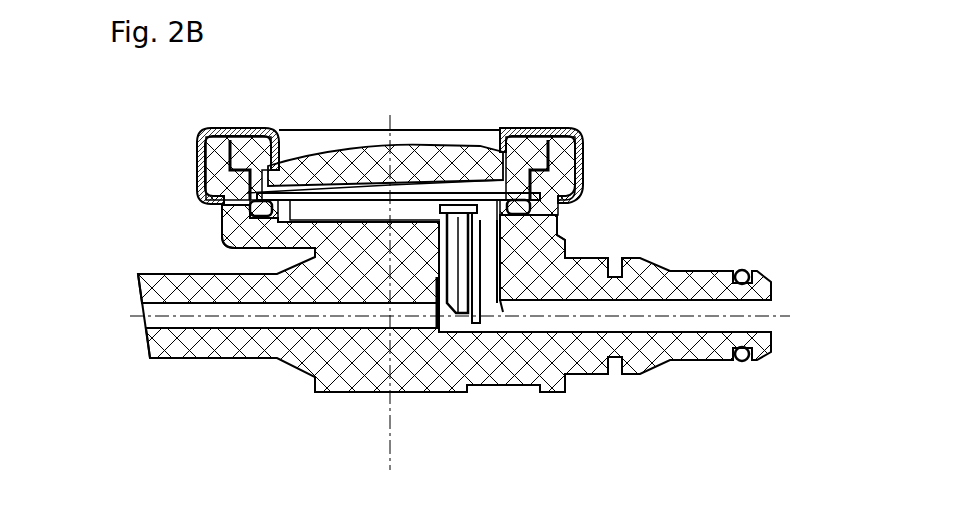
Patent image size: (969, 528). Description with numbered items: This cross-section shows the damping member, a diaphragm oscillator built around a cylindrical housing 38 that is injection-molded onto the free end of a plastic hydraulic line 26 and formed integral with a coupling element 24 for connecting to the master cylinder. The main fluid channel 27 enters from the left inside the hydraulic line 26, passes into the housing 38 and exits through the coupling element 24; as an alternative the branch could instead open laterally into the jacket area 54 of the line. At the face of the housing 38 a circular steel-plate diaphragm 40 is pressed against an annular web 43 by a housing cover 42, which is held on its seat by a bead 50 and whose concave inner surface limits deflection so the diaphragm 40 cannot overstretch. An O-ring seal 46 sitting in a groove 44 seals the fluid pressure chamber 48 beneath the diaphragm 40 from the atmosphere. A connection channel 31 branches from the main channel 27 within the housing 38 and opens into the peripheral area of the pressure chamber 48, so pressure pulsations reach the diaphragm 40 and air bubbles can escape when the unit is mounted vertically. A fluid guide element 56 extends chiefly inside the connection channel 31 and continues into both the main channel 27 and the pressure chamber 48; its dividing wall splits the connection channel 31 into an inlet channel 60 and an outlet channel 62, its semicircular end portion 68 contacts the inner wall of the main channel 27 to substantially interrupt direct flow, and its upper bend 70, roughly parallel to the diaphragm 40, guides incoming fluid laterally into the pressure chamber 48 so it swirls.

The coupling element 24 is at (660, 267).
The hydraulic line 26 is at (225, 376).
The main fluid channel 27 is at (765, 308).
The connection channel 31 is at (455, 300).
The housing 38 is at (548, 216).
The diaphragm 40 is at (345, 185).
The housing cover 42 is at (404, 157).
The annular web 43 is at (247, 237).
The groove 44 is at (560, 238).
The O-ring seal 46 is at (225, 200).
The fluid pressure chamber 48 is at (317, 205).
The bead 50 is at (560, 130).
The jacket area 54 is at (138, 283).
The fluid guide element 56 is at (507, 318).
The inlet channel 60 is at (419, 330).
The outlet channel 62 is at (483, 150).
The end portion 68 is at (457, 300).
The bend 70 is at (452, 205).